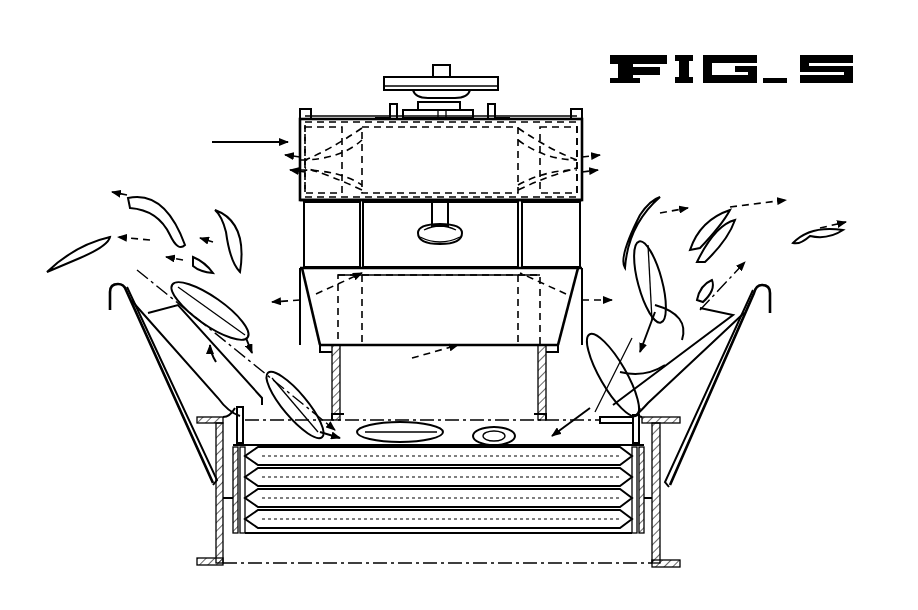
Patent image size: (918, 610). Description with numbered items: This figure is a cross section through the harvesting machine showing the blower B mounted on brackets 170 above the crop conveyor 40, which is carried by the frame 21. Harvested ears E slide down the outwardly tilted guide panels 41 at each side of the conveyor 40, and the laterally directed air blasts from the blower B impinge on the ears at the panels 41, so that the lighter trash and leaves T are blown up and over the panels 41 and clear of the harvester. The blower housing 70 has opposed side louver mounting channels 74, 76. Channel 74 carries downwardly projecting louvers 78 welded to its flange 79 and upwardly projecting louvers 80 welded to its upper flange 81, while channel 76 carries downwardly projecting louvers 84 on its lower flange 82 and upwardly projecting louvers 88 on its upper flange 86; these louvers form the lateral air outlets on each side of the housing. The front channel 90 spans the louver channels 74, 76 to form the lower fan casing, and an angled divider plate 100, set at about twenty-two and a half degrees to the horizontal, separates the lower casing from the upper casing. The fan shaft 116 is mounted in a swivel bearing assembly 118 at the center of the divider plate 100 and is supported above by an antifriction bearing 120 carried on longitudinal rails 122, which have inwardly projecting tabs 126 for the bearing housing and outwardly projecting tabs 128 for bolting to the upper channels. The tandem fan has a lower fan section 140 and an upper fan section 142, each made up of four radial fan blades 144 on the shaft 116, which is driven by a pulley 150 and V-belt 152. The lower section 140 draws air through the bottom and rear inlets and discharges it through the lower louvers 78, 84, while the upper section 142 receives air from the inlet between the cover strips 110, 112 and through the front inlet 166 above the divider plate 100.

The frame 21 is at (662, 545).
The crop conveyor 40 is at (495, 532).
The guide panels 41 is at (128, 284).
The blower housing 70 is at (585, 135).
The side louver mounting channel 74 is at (304, 226).
The side louver mounting channel 76 is at (582, 232).
The downwardly projecting louvers 78 is at (302, 318).
The flange 79 is at (350, 250).
The upwardly projecting louvers 80 is at (300, 123).
The upper flange 81 is at (352, 206).
The lower flange 82 is at (547, 248).
The downwardly projecting louvers 84 is at (580, 318).
The upper flange 86 is at (568, 206).
The upwardly projecting louvers 88 is at (590, 125).
The front channel 90 is at (455, 318).
The divider plate 100 is at (502, 258).
The cover strip 110 is at (300, 110).
The cover strip 112 is at (582, 110).
The fan shaft 116 is at (432, 214).
The swivel bearing assembly 118 is at (432, 237).
The antifriction bearing 120 is at (442, 112).
The longitudinal rails 122 is at (391, 105).
The inwardly projecting tabs 126 is at (414, 121).
The outwardly projecting tabs 128 is at (390, 114).
The lower fan section 140 is at (415, 359).
The upper fan section 142 is at (592, 160).
The radial fan blades 144 is at (300, 156).
The pulley 150 is at (486, 78).
The V-belt 152 is at (404, 82).
The front inlet 166 is at (400, 265).
The brackets 170 is at (330, 358).
The blower B is at (239, 142).
The trash and leaves T is at (137, 212).
The ears E is at (263, 383).